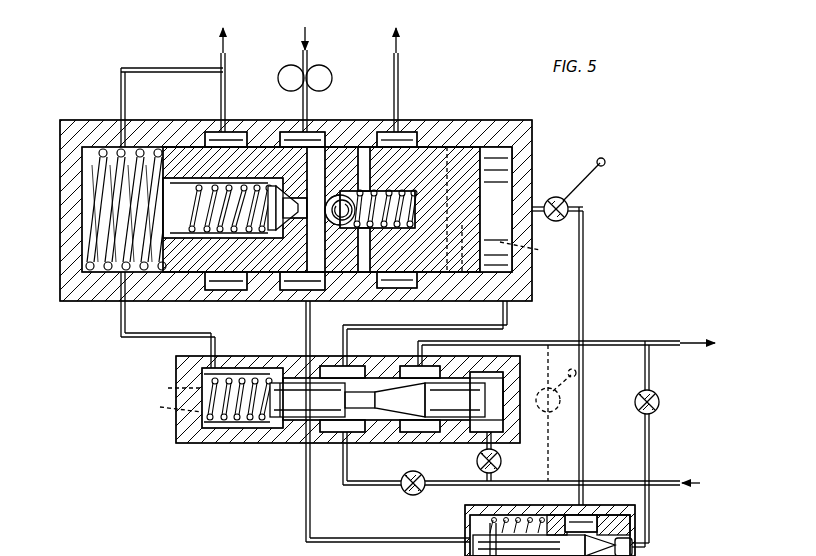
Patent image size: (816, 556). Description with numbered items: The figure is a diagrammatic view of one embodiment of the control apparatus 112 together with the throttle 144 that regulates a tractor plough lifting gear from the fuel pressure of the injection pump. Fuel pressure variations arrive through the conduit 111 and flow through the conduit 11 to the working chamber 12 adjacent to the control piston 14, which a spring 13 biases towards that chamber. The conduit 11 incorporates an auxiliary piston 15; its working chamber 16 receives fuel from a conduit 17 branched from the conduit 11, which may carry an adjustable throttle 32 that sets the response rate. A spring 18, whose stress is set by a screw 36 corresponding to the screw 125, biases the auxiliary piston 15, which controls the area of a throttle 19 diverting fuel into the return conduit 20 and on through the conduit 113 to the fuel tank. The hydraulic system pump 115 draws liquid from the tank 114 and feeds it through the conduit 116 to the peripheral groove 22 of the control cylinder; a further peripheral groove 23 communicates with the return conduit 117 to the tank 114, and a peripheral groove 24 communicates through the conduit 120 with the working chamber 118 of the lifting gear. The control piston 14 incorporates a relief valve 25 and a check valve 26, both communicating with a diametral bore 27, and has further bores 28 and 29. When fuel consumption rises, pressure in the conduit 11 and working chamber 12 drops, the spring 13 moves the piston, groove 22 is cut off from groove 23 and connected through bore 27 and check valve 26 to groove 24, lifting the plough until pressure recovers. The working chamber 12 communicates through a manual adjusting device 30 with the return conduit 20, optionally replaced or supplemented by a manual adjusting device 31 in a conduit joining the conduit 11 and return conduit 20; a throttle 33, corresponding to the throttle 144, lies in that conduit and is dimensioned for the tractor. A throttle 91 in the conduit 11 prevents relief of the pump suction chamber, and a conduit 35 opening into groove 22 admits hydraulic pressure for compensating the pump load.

The conduit 11 is at (667, 481).
The working chamber 12 is at (492, 167).
The spring 13 is at (108, 206).
The control piston 14 is at (321, 183).
The auxiliary piston 15 is at (298, 405).
The working chamber 16 is at (497, 400).
The conduit 17 is at (491, 452).
The spring 18 is at (231, 420).
The throttle 19 is at (400, 420).
The return conduit 20 is at (611, 341).
The peripheral groove 22 is at (294, 131).
The peripheral groove 23 is at (220, 131).
The peripheral groove 24 is at (408, 131).
The relief valve 25 is at (278, 236).
The check valve 26 is at (344, 199).
The diametral bore 27 is at (262, 131).
The bore 28 is at (531, 252).
The bore 29 is at (400, 284).
The manual adjusting device 30 is at (556, 197).
The manual adjusting device 31 is at (564, 413).
The adjustable throttle 32 is at (477, 462).
The throttle 33 is at (659, 400).
The conduit 35 is at (306, 492).
The screw 36 is at (166, 402).
The throttle 91 is at (407, 493).
The conduit 111 is at (704, 481).
The control apparatus 112 is at (113, 341).
The conduit 113 is at (694, 341).
The tank 114 is at (258, 555).
The hydraulic system pump 115 is at (318, 67).
The conduit 116 is at (308, 102).
The return conduit 117 is at (225, 66).
The working chamber 118 is at (418, 38).
The conduit 120 is at (398, 69).
The screw 125 is at (104, 407).
The throttle 144 is at (712, 402).